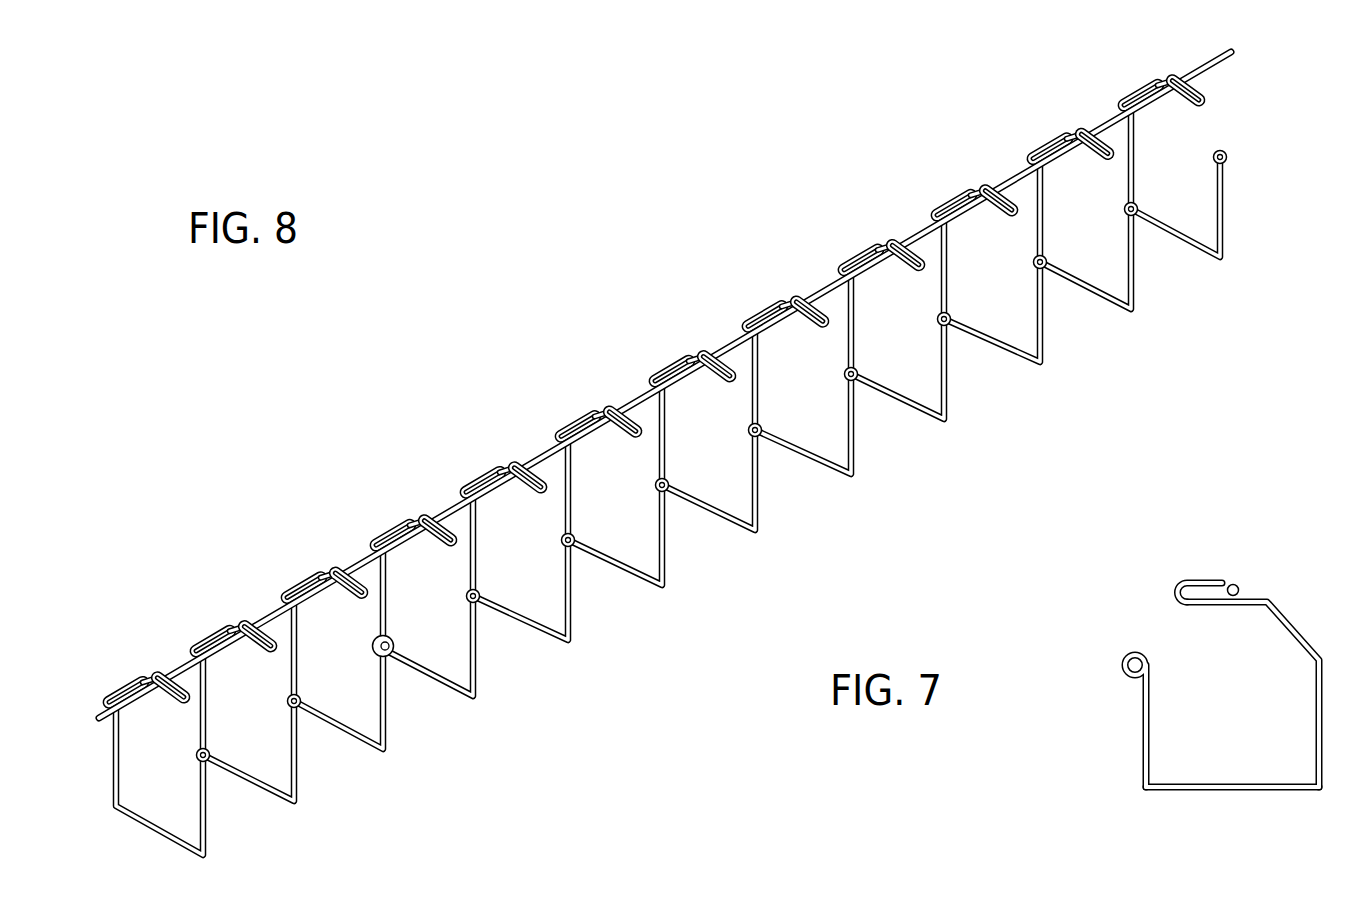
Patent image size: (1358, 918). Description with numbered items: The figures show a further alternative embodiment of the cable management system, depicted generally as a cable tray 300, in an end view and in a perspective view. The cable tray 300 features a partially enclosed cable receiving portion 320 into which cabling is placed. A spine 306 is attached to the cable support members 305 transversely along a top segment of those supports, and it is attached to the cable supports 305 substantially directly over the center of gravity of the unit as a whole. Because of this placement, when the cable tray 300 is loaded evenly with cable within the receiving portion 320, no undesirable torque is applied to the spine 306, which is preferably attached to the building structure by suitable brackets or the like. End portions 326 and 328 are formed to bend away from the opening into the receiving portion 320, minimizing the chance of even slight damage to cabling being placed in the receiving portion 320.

In FIG. 8, the cable tray 300 is at (728, 300).
In FIG. 7, the cable tray 300 is at (1247, 550).
In FIG. 8, the cable support members 305 is at (150, 827).
In FIG. 7, the cable support members 305 is at (1300, 790).
In FIG. 8, the spine 306 is at (187, 660).
In FIG. 7, the spine 306 is at (1240, 588).
In FIG. 7, the cable receiving portion 320 is at (1228, 708).
In FIG. 7, the end portion 326 is at (1123, 658).
In FIG. 7, the end portion 328 is at (1180, 592).